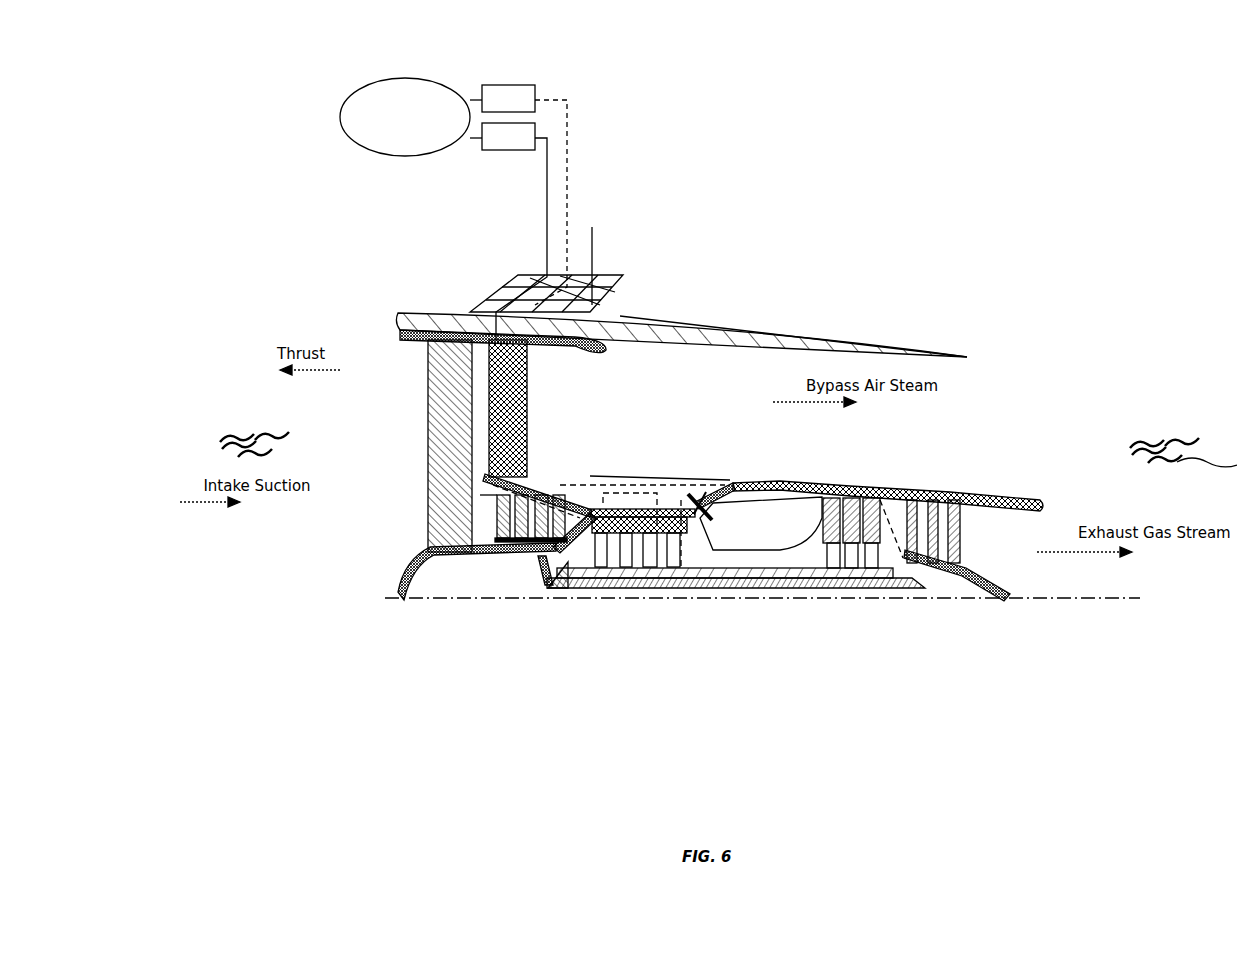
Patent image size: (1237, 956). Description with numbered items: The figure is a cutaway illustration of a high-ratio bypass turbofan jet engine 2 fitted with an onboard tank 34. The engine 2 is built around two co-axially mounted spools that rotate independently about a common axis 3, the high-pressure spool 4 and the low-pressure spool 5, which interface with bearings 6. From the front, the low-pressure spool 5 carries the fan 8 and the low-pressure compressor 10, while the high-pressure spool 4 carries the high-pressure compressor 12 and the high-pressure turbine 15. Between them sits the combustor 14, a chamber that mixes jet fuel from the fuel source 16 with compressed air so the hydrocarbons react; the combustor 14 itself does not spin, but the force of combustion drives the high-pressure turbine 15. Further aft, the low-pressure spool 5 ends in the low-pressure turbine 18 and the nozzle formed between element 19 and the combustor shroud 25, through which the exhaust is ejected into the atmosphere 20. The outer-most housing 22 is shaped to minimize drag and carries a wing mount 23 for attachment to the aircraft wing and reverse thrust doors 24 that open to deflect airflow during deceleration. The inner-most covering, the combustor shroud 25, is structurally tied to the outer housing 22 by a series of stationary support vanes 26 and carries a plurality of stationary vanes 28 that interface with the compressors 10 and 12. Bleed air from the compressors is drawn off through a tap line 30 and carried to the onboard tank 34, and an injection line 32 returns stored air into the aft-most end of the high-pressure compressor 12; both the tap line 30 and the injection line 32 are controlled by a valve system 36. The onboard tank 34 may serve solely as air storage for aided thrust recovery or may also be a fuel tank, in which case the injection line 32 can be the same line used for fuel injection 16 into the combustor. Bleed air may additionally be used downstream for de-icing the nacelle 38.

The jet engine 2 is at (283, 742).
The axis 3 is at (385, 598).
The high-pressure spool 4 is at (695, 580).
The low-pressure spool 5 is at (770, 590).
The bearings 6 is at (533, 582).
The fan 8 is at (432, 478).
The low-pressure compressor 10 is at (495, 512).
The high-pressure compressor 12 is at (602, 568).
The combustor 14 is at (765, 520).
The high-pressure turbine 15 is at (855, 585).
The fuel source 16 is at (592, 260).
The low-pressure turbine 18 is at (958, 574).
The nozzle 19 is at (990, 585).
The atmosphere 20 is at (222, 452).
The outer-most housing 22 is at (875, 341).
The wing mount 23 is at (494, 300).
The reverse thrust doors 24 is at (698, 330).
The combustor shroud 25 is at (998, 500).
The stationary support vanes 26 is at (528, 388).
The stationary vanes 28 is at (452, 566).
The tap line 30 is at (542, 204).
The injection line 32 is at (568, 150).
The onboard tank 34 is at (386, 117).
The valve system 36 is at (503, 107).
The nacelle 38 is at (400, 324).